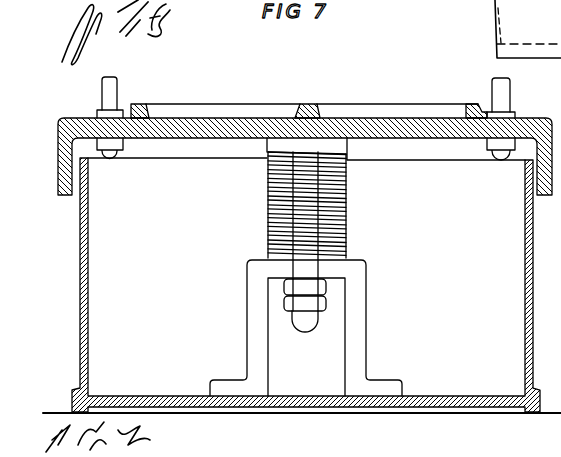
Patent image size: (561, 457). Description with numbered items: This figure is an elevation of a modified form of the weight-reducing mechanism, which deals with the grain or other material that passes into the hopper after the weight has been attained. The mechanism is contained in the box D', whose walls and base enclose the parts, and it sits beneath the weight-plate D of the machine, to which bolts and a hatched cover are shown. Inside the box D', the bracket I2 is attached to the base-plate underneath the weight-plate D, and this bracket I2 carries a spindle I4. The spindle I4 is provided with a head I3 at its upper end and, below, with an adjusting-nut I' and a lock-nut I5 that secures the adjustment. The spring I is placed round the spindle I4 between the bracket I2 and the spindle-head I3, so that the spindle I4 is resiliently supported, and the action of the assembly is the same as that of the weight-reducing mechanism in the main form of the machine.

The weight-plate D is at (305, 135).
The box D' is at (306, 275).
The spring I is at (318, 205).
The adjusting-nut I' is at (314, 280).
The bracket I2 is at (358, 325).
The spindle-head I3 is at (268, 148).
The spindle I4 is at (303, 327).
The lock-nut I5 is at (301, 304).